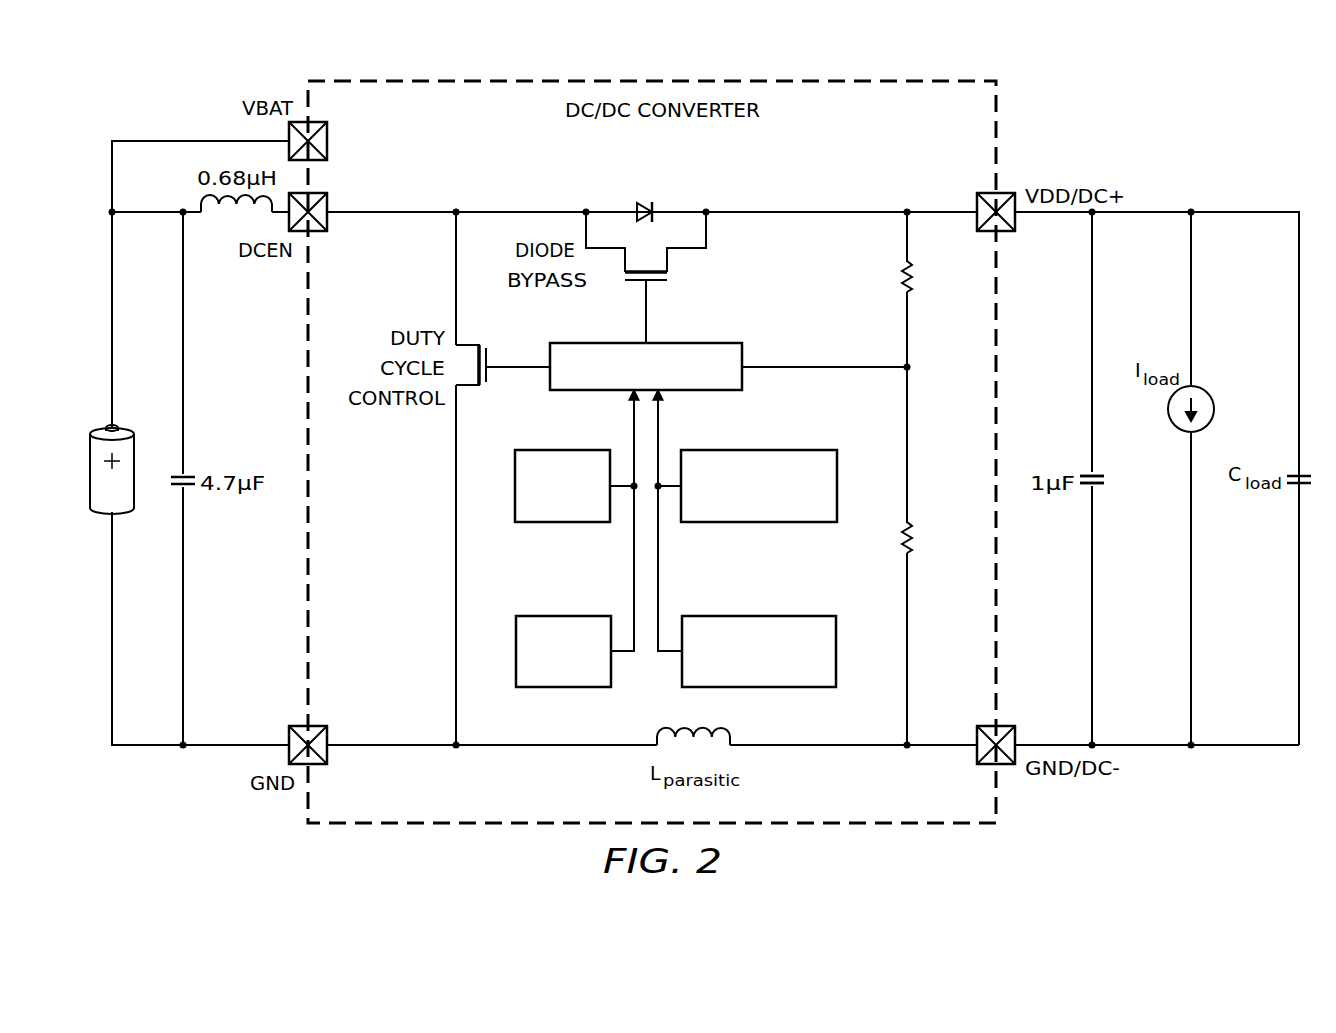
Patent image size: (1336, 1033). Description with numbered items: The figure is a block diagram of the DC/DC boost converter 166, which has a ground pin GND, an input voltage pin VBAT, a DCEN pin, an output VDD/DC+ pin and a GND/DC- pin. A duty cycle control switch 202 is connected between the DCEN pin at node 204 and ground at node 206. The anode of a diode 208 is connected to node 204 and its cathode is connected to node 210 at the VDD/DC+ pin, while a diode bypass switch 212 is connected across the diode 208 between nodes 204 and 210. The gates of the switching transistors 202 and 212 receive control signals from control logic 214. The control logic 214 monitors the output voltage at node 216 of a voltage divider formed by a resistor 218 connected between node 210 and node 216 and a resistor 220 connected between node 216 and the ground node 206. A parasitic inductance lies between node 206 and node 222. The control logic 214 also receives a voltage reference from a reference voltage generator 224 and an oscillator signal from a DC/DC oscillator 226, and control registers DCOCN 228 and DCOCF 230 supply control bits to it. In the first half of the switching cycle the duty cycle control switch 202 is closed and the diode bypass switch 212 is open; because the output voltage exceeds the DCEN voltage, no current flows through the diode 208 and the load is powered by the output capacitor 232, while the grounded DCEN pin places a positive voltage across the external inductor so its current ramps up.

The DC/DC boost converter 166 is at (449, 78).
The duty cycle control switch 202 is at (489, 378).
The node 204 is at (460, 208).
The node 206 is at (460, 750).
The diode 208 is at (648, 200).
The node 210 is at (904, 208).
The diode bypass switch 212 is at (660, 282).
The control logic 214 is at (745, 353).
The node 216 is at (904, 372).
The resistor 218 is at (903, 275).
The resistor 220 is at (903, 549).
The node 222 is at (904, 750).
The reference voltage generator 224 is at (777, 523).
The DC/DC oscillator 226 is at (740, 615).
The DCOCN control register 228 is at (545, 523).
The DCOCF control register 230 is at (580, 615).
The output capacitor 232 is at (1107, 480).